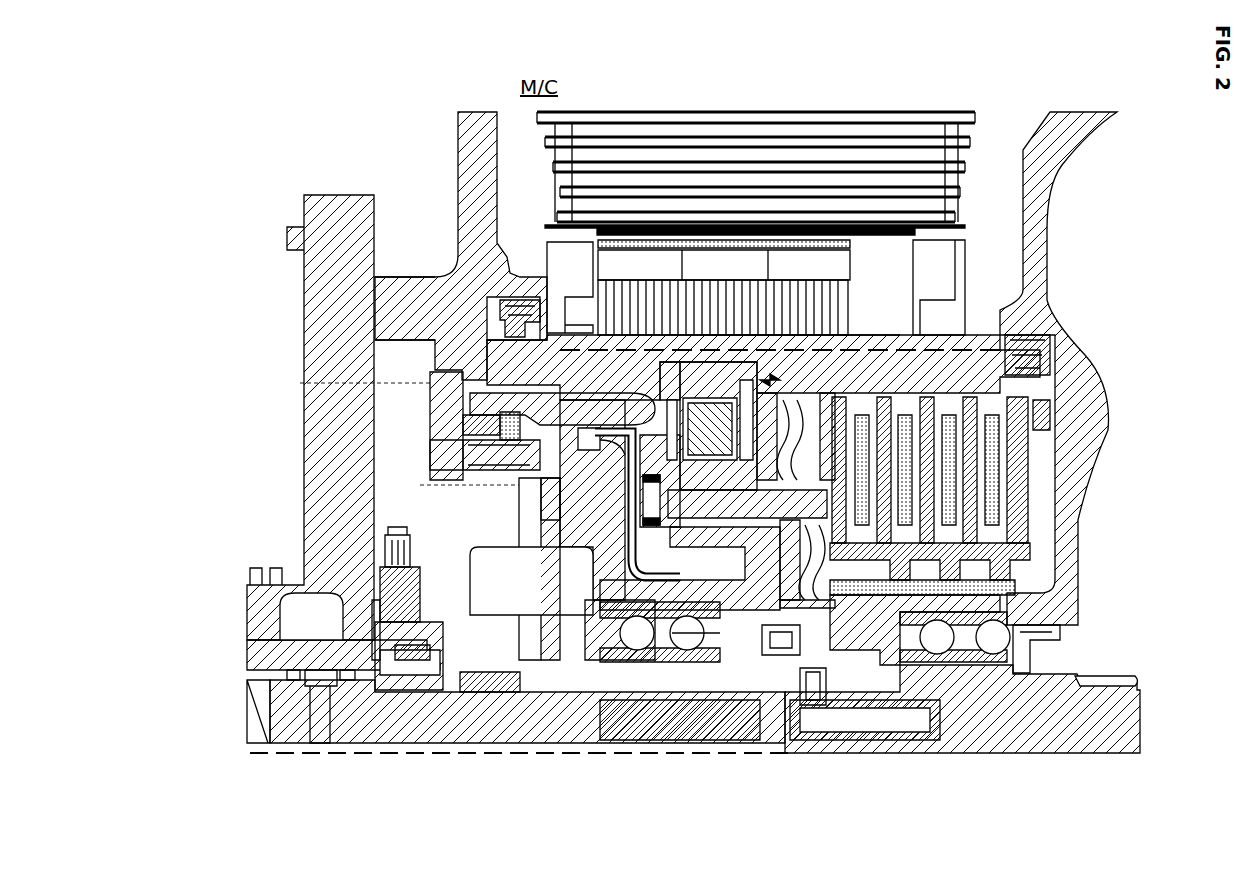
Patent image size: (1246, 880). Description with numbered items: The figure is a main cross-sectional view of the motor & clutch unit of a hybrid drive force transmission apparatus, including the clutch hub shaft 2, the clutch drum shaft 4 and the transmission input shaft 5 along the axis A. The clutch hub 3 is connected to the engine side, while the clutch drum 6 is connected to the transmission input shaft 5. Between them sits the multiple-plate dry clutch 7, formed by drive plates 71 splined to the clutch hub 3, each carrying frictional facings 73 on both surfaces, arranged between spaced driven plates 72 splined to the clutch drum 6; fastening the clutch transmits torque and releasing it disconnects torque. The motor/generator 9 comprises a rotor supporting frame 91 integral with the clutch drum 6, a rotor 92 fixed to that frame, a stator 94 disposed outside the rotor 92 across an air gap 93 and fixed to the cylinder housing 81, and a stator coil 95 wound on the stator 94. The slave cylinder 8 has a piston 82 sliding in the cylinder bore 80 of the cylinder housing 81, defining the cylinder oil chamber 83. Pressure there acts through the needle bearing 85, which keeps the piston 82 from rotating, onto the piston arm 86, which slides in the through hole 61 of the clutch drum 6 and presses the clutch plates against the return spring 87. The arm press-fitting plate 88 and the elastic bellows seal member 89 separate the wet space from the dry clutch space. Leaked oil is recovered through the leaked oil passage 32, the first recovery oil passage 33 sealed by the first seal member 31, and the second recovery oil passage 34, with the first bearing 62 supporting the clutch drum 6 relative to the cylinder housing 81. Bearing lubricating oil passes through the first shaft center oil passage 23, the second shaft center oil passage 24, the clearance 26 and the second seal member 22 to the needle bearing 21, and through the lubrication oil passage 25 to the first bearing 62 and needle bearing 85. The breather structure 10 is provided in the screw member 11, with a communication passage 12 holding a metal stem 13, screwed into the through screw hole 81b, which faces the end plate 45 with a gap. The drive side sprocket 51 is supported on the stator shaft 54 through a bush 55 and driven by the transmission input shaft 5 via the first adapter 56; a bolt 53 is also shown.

The clutch hub shaft 2 is at (1045, 725).
The clutch hub 3 is at (1040, 622).
The clutch drum shaft 4 is at (680, 695).
The transmission input shaft 5 is at (522, 718).
The clutch drum 6 is at (1010, 300).
The multiple-plate dry clutch 7 is at (996, 496).
The slave cylinder 8 is at (510, 523).
The motor/generator 9 is at (756, 180).
The breather structure 10 is at (455, 500).
The screw member 11 is at (445, 390).
The communication passage 12 is at (463, 428).
The stem 13 is at (430, 458).
The needle bearing 21 is at (812, 708).
The second seal member 22 is at (790, 660).
The first shaft center oil passage 23 is at (442, 748).
The second shaft center oil passage 24 is at (884, 742).
The lubrication oil passage 25 is at (715, 705).
The clearance 26 is at (843, 735).
The first seal member 31 is at (525, 296).
The leaked oil passage 32 is at (740, 330).
The first recovery oil passage 33 is at (604, 345).
The second recovery oil passage 34 is at (425, 298).
The end plate 45 is at (338, 302).
The drive side sprocket 51 is at (300, 606).
The bolt 53 is at (375, 540).
The stator shaft 54 is at (275, 648).
The bush 55 is at (325, 700).
The first adapter 56 is at (415, 700).
The through hole 61 is at (712, 548).
The first bearing 62 is at (600, 630).
The drive plates 71 is at (990, 520).
The driven plates 72 is at (965, 470).
The frictional facings 73 is at (970, 487).
The cylinder bore 80 is at (664, 400).
The cylinder housing 81 is at (458, 200).
The through screw hole 81b is at (498, 482).
The piston 82 is at (615, 540).
The cylinder oil chamber 83 is at (575, 250).
The needle bearing 85 is at (592, 500).
The piston arm 86 is at (722, 500).
The return spring 87 is at (710, 405).
The arm press-fitting plate 88 is at (800, 500).
The elastic bellows seal member 89 is at (880, 348).
The rotor supporting frame 91 is at (648, 113).
The rotor 92 is at (720, 226).
The air gap 93 is at (775, 240).
The stator 94 is at (812, 235).
The stator coil 95 is at (930, 240).
The axis A is at (300, 383).